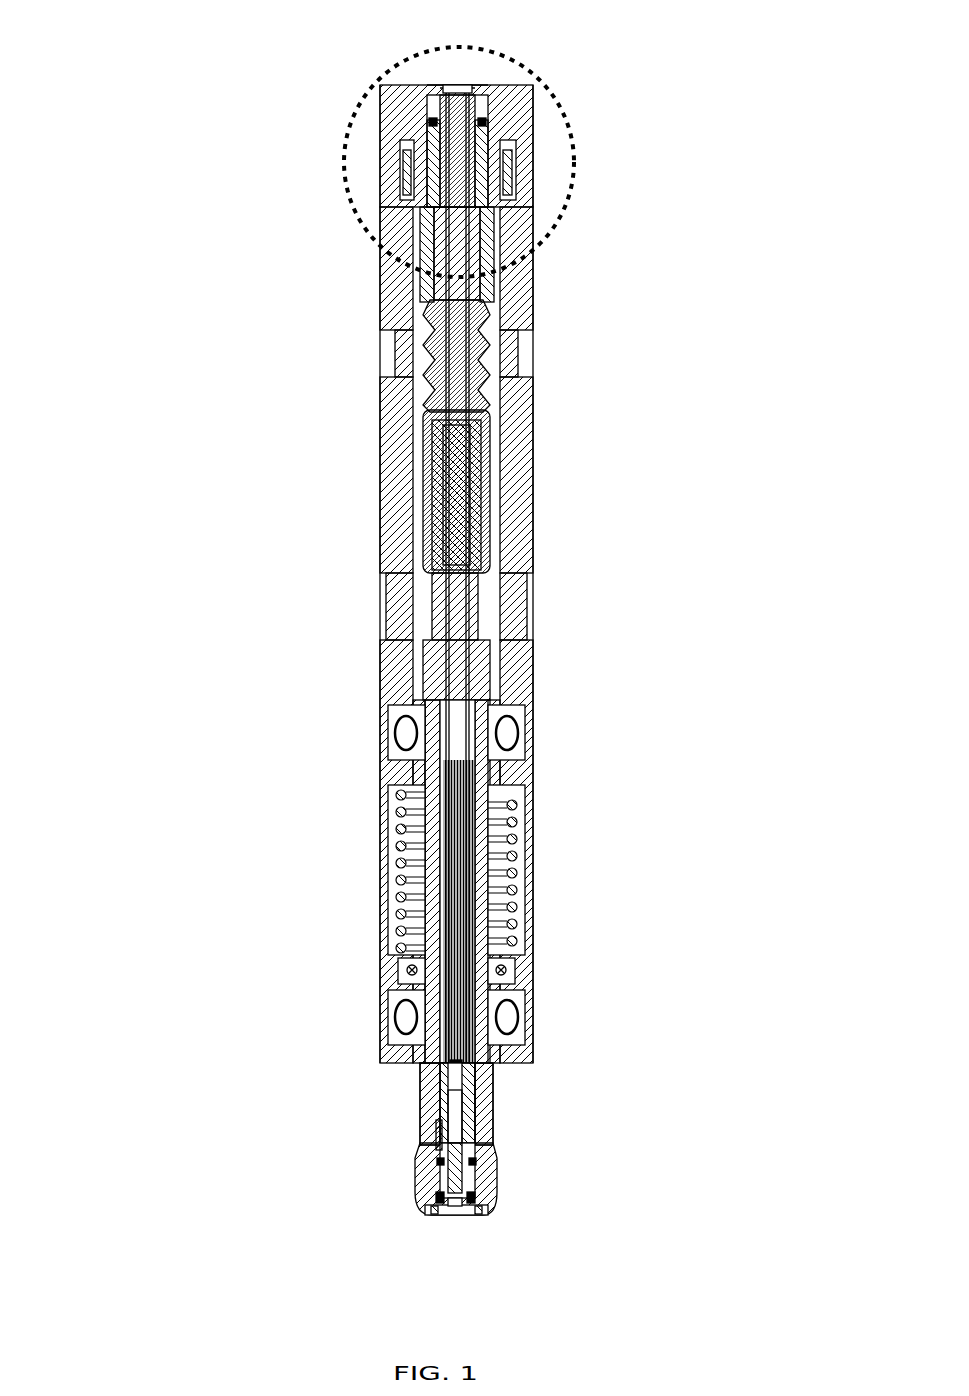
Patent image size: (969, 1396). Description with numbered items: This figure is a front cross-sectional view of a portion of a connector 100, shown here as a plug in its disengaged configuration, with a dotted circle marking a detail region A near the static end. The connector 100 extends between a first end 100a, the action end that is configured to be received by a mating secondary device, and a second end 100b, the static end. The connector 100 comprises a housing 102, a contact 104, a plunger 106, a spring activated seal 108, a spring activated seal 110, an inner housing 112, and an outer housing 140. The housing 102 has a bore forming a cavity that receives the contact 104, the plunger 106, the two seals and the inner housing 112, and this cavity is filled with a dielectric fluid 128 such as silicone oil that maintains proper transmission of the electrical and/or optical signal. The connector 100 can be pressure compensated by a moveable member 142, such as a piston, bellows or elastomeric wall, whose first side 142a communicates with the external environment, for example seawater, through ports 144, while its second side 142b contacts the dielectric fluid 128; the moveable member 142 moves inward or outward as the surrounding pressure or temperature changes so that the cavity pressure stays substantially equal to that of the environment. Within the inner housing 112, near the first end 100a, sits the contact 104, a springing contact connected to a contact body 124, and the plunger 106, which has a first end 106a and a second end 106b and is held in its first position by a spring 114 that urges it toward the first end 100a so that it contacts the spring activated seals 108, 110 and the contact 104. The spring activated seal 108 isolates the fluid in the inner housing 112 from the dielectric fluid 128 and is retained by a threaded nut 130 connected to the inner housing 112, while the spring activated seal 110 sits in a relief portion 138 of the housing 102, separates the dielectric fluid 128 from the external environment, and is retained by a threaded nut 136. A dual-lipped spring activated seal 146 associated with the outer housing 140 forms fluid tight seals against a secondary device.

The connector 100 is at (170, 197).
The first end 100a is at (475, 1215).
The second end 100b is at (480, 88).
The housing 102 is at (490, 1086).
The contact 104 is at (465, 1148).
The plunger 106 is at (458, 1107).
The first end of plunger 106a is at (457, 1208).
The second end of plunger 106b is at (452, 1070).
The spring activated seal 108 is at (470, 1157).
The spring activated seal 110 is at (473, 1193).
The inner housing 112 is at (443, 1117).
The spring 114 is at (462, 1025).
The contact body 124 is at (445, 1130).
The dielectric fluid 128 is at (472, 513).
The threaded nut 130 is at (435, 1177).
The threaded nut 136 is at (472, 1215).
The relief portion 138 is at (440, 1206).
The outer housing 140 is at (522, 661).
The moveable member 142 is at (487, 432).
The first side of moveable member 142a is at (490, 380).
The second side of moveable member 142b is at (475, 405).
The ports 144 is at (380, 252).
The dual-lipped spring activated seal 146 is at (478, 125).
The detail region A is at (575, 162).